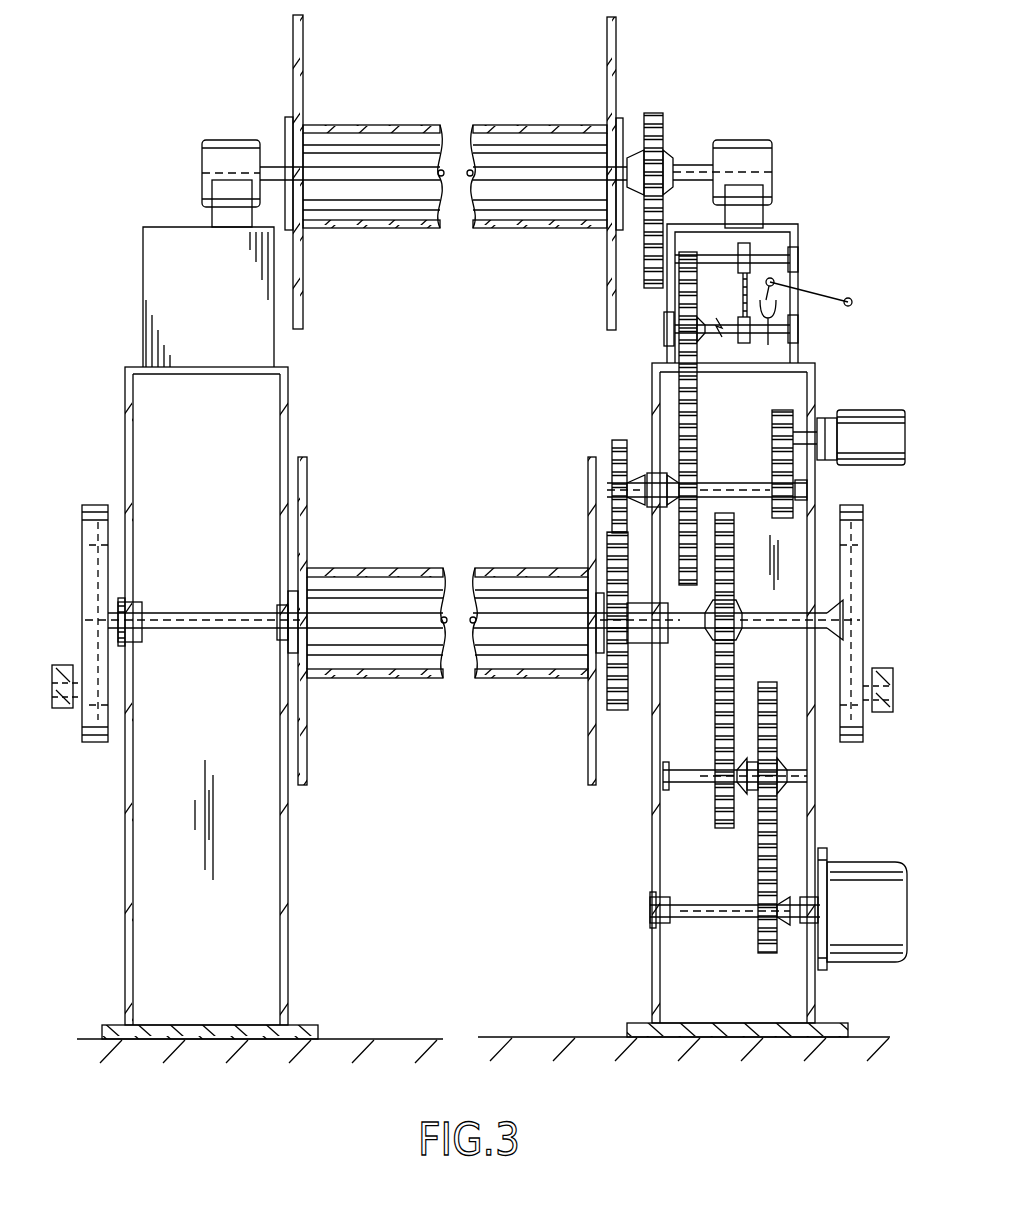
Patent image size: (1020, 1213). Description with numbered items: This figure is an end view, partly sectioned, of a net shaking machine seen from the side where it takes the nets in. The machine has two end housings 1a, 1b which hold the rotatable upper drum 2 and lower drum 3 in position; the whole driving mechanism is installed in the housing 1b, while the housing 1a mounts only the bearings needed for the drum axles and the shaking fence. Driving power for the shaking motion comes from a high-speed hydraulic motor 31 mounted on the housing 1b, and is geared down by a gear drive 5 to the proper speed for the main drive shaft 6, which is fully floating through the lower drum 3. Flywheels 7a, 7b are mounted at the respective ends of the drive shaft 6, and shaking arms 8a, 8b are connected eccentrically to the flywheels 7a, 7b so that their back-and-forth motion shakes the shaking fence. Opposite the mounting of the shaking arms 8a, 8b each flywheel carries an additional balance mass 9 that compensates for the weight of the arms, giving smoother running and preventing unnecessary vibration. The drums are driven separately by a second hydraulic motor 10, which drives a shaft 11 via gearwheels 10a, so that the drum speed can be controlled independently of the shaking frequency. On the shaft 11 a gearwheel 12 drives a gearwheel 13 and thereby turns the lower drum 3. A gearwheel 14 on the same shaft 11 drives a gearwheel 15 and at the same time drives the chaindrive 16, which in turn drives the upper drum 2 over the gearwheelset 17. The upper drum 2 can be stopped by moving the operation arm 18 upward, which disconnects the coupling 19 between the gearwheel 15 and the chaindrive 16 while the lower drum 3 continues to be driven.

The end housing 1a is at (280, 937).
The end housing 1b is at (672, 938).
The upper drum 2 is at (473, 125).
The lower drum 3 is at (476, 567).
The gear drive 5 is at (760, 888).
The main drive shaft 6 is at (392, 633).
The flywheel 7a is at (850, 505).
The flywheel 7b is at (92, 505).
The shaking arm 8a is at (878, 714).
The shaking arm 8b is at (62, 708).
The balance mass 9 is at (83, 553).
The hydraulic motor 10 is at (868, 410).
The gearwheels 10a is at (771, 452).
The shaft 11 is at (741, 498).
The gearwheel 12 is at (618, 440).
The gearwheel 13 is at (608, 543).
The gearwheel 14 is at (699, 432).
The gearwheel 15 is at (683, 352).
The chaindrive 16 is at (748, 279).
The gearwheelset 17 is at (645, 262).
The operation arm 18 is at (852, 304).
The coupling 19 is at (717, 335).
The motor 31 is at (870, 862).